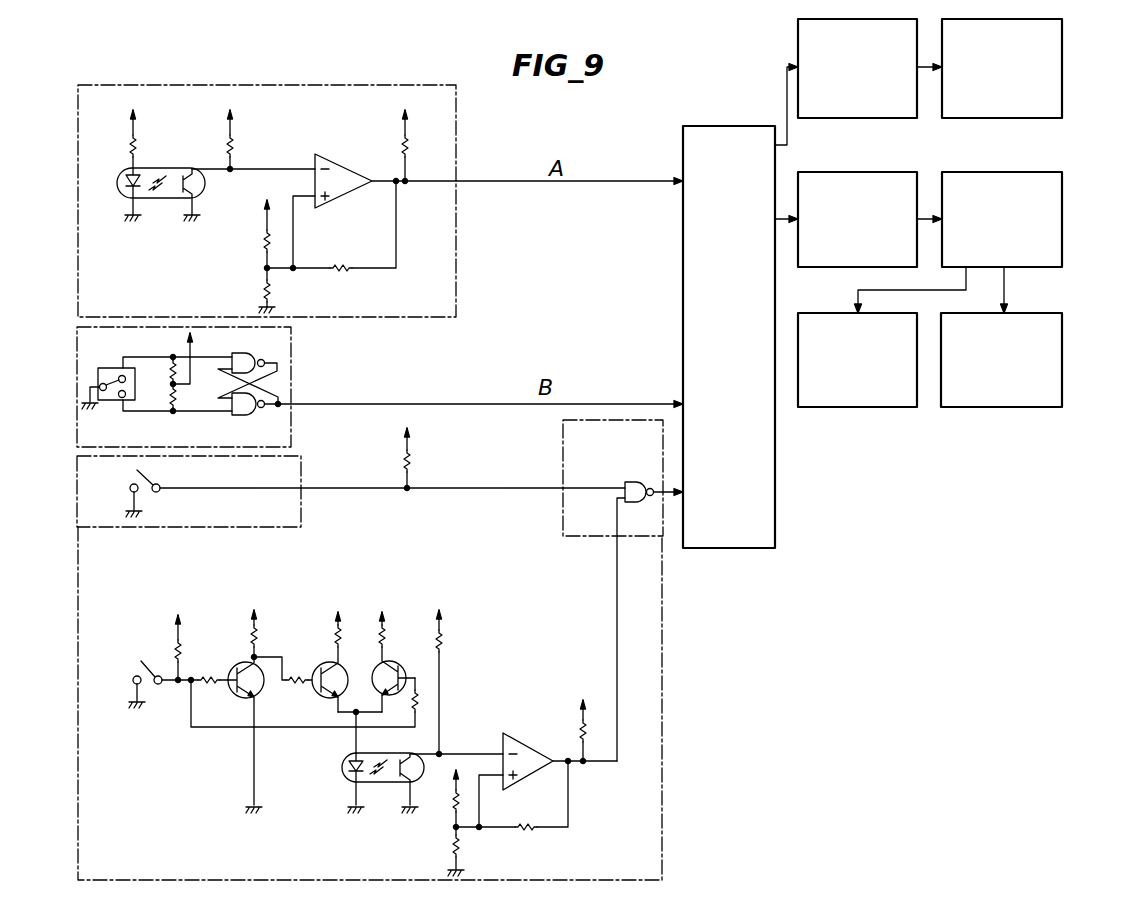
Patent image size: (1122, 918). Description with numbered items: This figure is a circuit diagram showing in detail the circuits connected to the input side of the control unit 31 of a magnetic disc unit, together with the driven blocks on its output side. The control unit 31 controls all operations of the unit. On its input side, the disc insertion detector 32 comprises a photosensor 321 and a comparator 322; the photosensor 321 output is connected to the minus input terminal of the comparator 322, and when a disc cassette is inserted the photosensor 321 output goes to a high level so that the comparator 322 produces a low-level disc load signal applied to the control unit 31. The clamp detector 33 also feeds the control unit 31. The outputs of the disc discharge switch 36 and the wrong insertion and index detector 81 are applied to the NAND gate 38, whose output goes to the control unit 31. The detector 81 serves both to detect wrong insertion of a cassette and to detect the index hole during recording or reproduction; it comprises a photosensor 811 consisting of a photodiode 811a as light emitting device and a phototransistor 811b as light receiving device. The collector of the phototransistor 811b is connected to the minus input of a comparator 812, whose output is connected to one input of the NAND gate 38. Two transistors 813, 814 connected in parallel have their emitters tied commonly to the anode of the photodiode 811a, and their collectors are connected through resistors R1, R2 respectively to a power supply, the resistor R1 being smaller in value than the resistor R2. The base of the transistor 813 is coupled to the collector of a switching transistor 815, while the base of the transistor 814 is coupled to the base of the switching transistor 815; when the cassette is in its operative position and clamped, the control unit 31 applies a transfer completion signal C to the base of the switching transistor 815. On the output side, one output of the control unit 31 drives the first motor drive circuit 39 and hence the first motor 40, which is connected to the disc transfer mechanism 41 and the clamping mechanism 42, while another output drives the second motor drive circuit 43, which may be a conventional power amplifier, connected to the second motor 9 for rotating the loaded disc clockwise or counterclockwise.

The second motor 9 is at (1065, 53).
The control unit 31 is at (738, 126).
The disc insertion detector 32 is at (78, 190).
The clamp detector 33 is at (77, 415).
The disc discharge switch 36 is at (130, 488).
The NAND gate 38 is at (635, 482).
The first motor drive circuit 39 is at (868, 172).
The first motor 40 is at (1006, 172).
The disc transfer mechanism 41 is at (897, 408).
The clamping mechanism 42 is at (1013, 408).
The second motor drive circuit 43 is at (798, 42).
The wrong insertion and index detector 81 is at (78, 694).
The photosensor 321 is at (168, 167).
The comparator 322 is at (349, 167).
The photosensor 811 is at (348, 802).
The photodiode 811a is at (342, 766).
The phototransistor 811b is at (402, 783).
The comparator 812 is at (530, 724).
The transistor 813 is at (318, 668).
The transistor 814 is at (397, 662).
The switching transistor 815 is at (232, 668).
The resistor R1 is at (338, 625).
The resistor R2 is at (382, 625).
The transfer completion signal C is at (148, 720).